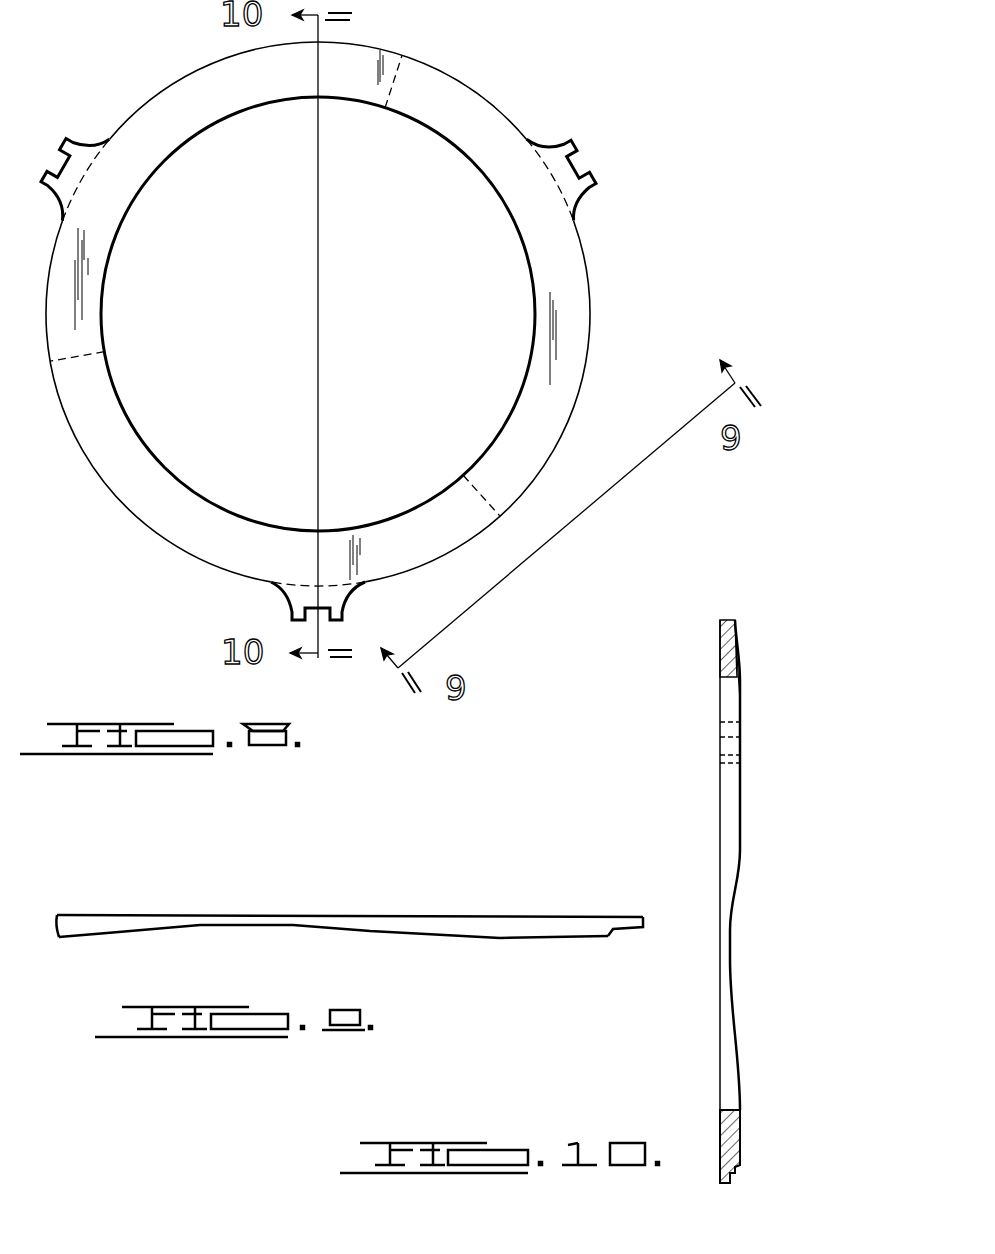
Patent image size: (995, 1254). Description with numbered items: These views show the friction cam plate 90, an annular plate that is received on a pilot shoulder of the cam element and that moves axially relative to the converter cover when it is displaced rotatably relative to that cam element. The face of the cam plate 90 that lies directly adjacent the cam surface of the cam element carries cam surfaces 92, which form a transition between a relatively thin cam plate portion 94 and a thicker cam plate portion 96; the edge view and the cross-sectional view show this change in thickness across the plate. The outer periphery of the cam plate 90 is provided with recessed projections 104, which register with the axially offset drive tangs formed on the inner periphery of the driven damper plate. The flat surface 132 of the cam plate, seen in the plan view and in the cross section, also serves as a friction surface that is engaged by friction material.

In FIG. 8, the friction cam plate 90 is at (548, 277).
In FIG. 9, the friction cam plate 90 is at (349, 941).
In FIG. 10, the friction cam plate 90 is at (708, 901).
In FIG. 9, the cam surfaces 92 is at (487, 937).
In FIG. 10, the cam surfaces 92 is at (740, 851).
In FIG. 10, the thin cam plate portion 94 is at (731, 922).
In FIG. 9, the thicker cam plate portion 96 is at (578, 940).
In FIG. 10, the thicker cam plate portion 96 is at (740, 792).
In FIG. 8, the recessed projections 104 is at (568, 142).
In FIG. 10, the flat surface 132 is at (718, 800).